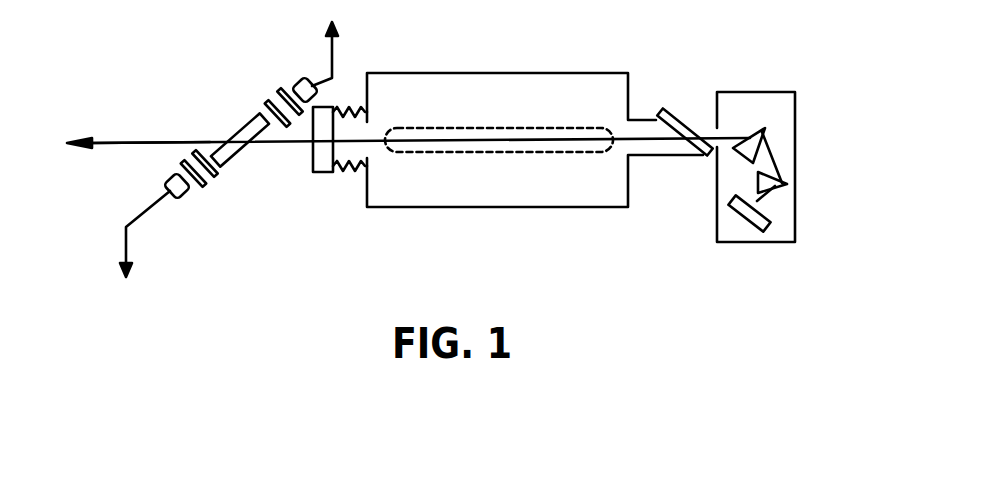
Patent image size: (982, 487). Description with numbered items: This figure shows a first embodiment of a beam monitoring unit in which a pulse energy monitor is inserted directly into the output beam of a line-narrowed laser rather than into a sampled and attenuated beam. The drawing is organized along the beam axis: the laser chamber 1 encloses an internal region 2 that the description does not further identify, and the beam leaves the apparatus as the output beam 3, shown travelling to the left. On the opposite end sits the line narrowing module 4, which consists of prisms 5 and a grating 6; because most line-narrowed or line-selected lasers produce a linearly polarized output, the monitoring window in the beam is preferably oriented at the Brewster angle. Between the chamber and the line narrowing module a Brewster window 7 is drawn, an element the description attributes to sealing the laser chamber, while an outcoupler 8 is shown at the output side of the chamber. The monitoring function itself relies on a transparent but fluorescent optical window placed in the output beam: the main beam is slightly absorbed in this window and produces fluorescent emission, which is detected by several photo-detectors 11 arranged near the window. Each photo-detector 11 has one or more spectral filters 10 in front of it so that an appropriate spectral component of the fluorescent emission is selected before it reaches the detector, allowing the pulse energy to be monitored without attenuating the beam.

The laser housing / resonator 1 is at (520, 73).
The laser gain medium 2 is at (478, 153).
The output laser beam 3 is at (98, 142).
The line narrowing module 4 is at (760, 91).
The prisms 5 is at (237, 127).
The grating 6 is at (772, 216).
The Brewster window 7 is at (674, 110).
The outcoupler 8 is at (325, 173).
The spectral filters 10 is at (267, 95).
The photo-detectors 11 is at (302, 80).